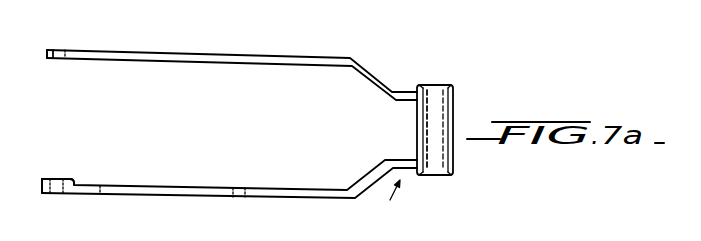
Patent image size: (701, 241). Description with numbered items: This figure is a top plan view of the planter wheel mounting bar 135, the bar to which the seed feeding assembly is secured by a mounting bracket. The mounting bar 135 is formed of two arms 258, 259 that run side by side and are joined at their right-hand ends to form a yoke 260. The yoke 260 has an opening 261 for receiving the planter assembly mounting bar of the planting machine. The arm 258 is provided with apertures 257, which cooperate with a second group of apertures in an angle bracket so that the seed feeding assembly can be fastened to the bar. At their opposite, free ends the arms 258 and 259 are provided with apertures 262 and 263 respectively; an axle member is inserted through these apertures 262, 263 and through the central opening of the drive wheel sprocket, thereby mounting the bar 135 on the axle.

The arm 259 is at (181, 55).
The aperture 263 is at (57, 61).
The arm 258 is at (178, 187).
The aperture 262 is at (62, 177).
The apertures 257 is at (100, 196).
The yoke 260 is at (422, 130).
The opening 261 is at (433, 91).
The planter wheel mounting bar 135 is at (385, 201).